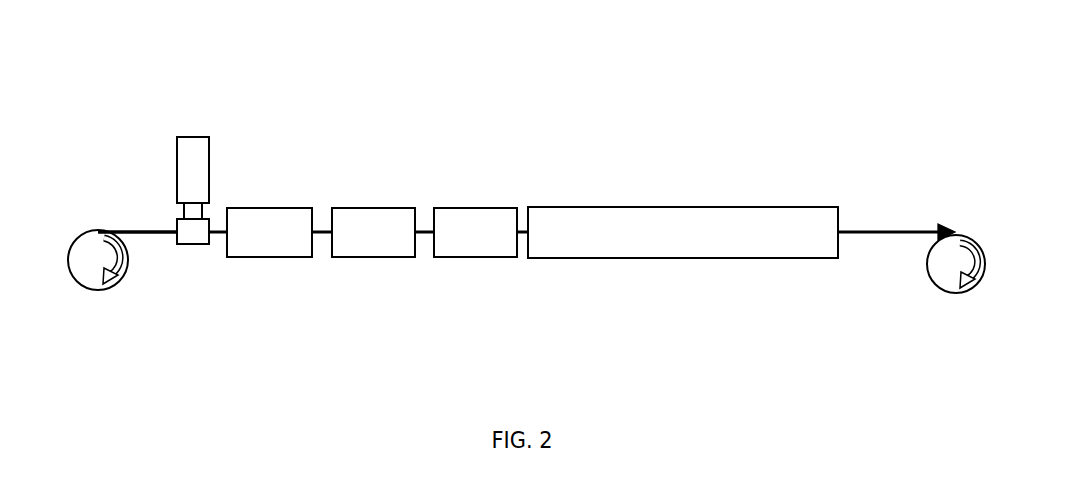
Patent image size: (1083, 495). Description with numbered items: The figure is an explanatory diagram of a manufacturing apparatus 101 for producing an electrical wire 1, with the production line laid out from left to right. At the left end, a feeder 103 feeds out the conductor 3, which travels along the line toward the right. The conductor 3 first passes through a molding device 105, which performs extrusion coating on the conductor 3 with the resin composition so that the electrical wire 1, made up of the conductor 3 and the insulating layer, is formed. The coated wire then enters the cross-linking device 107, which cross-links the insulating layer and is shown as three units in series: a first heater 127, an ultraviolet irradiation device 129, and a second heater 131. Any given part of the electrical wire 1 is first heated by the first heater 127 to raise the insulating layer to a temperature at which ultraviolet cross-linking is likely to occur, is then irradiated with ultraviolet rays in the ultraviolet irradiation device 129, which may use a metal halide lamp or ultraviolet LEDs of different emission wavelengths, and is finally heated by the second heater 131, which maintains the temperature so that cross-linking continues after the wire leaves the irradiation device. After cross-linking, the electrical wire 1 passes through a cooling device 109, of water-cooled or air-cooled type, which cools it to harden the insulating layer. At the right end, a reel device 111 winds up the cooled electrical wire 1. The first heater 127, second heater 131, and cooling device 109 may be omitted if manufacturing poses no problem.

The electrical wire 1 is at (217, 234).
The conductor 3 is at (150, 231).
The manufacturing apparatus 101 is at (667, 107).
The feeder 103 is at (98, 290).
The molding device 105 is at (210, 156).
The cross-linking device 107 is at (295, 334).
The cooling device 109 is at (680, 258).
The reel device 111 is at (960, 293).
The first heater 127 is at (270, 257).
The ultraviolet irradiation device 129 is at (375, 257).
The second heater 131 is at (478, 257).